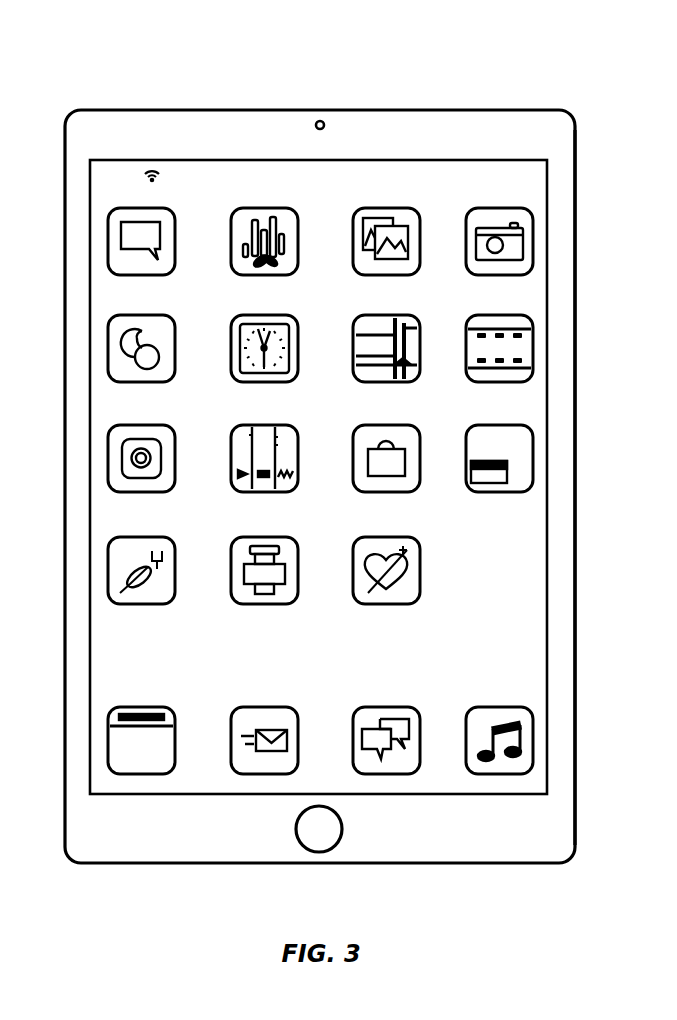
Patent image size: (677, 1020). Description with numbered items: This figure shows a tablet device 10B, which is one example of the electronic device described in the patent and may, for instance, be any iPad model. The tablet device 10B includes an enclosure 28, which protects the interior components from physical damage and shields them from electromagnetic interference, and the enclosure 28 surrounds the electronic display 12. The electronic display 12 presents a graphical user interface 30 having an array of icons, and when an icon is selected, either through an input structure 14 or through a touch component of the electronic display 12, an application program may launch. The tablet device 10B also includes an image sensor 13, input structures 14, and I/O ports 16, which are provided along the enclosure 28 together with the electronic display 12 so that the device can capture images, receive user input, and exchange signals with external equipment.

The tablet device 10B is at (46, 84).
The electronic display 12 is at (548, 540).
The image sensor 13 is at (320, 112).
The input structures 14 is at (513, 110).
The I/O ports 16 is at (153, 110).
The enclosure 28 is at (577, 471).
The graphical user interface 30 is at (526, 600).